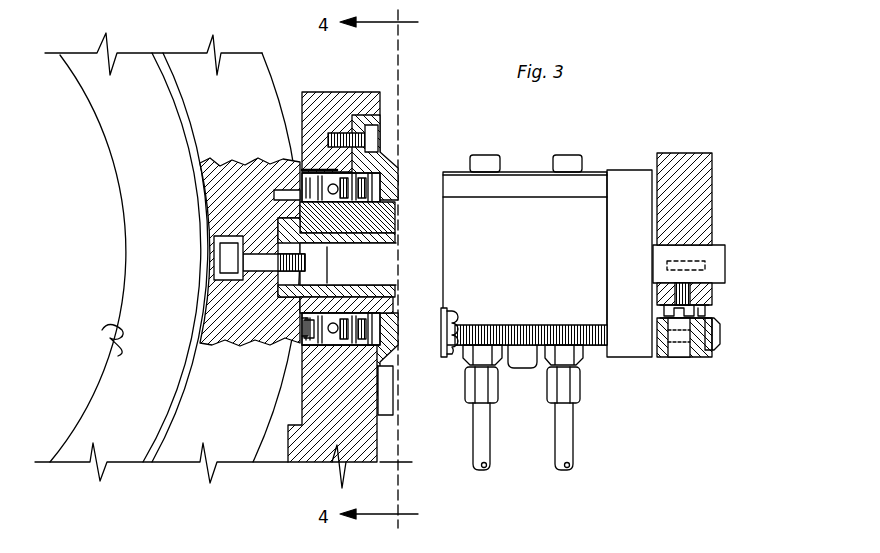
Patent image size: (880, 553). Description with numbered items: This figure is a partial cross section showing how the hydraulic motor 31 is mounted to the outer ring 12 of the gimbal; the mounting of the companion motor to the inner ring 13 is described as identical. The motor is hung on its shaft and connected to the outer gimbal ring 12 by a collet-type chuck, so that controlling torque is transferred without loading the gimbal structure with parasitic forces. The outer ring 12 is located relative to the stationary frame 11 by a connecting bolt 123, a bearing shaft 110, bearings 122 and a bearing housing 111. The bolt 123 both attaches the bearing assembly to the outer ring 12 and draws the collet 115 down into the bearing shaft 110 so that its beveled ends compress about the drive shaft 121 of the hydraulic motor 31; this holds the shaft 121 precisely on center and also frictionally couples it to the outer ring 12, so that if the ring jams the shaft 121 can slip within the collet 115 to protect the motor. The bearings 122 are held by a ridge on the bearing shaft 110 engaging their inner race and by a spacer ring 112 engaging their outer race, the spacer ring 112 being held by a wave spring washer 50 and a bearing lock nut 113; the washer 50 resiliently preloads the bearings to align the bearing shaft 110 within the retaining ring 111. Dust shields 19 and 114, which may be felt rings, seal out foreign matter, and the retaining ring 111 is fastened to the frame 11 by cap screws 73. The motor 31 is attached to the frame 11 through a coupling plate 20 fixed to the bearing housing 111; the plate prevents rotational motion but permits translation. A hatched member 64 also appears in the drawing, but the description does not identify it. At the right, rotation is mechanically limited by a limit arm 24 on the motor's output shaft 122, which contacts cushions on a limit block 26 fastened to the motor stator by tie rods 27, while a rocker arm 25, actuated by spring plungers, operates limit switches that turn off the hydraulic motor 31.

The frame 11 is at (338, 92).
The outer gimbal ring 12 is at (248, 53).
The inner ring 13 is at (136, 53).
The dust shield 19 is at (318, 318).
The coupling plate 20 is at (395, 410).
The limit arm 24 is at (712, 158).
The rocker arm 25 is at (706, 312).
The limit block 26 is at (678, 357).
The tie rods 27 is at (720, 340).
The hydraulic motor 31 is at (528, 174).
The wave spring washer 50 is at (355, 325).
The hub 64 is at (276, 190).
The cap screws 73 is at (378, 135).
The bearing shaft 110 is at (394, 215).
The bearing housing 111 is at (380, 100).
The spacer ring 112 is at (385, 160).
The bearing lock nut 113 is at (382, 186).
The dust shield 114 is at (365, 305).
The collet 115 is at (392, 238).
The drive shaft 121 is at (390, 272).
The bearings 122 is at (312, 342).
The connecting bolt 123 is at (218, 258).